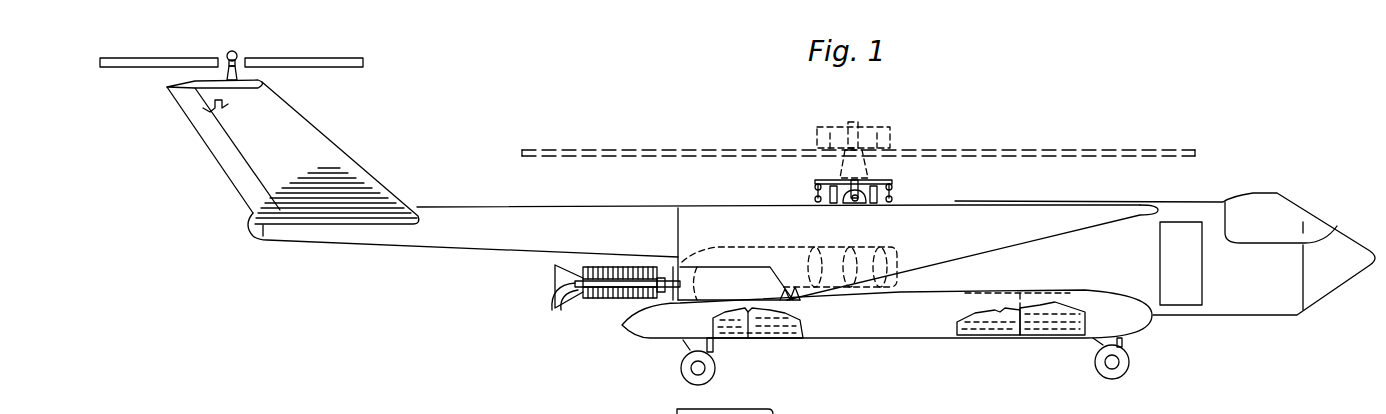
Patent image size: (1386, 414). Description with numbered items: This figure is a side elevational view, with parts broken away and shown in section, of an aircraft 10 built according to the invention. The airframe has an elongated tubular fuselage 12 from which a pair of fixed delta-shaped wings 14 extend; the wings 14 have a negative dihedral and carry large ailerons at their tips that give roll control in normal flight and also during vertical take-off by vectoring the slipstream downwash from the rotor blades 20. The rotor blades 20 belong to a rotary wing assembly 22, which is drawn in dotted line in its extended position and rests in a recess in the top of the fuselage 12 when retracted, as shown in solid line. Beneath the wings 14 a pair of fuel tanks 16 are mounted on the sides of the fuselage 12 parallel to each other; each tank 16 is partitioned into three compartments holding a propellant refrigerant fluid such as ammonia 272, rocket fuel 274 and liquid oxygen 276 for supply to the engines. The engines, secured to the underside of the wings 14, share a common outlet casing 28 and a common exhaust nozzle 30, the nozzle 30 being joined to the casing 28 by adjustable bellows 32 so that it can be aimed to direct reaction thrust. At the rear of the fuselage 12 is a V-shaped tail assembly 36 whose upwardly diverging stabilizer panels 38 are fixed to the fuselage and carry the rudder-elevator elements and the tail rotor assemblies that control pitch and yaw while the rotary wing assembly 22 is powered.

The aircraft 10 is at (1238, 112).
The fuselage 12 is at (513, 206).
The fixed delta-shaped wings 14 is at (1011, 200).
The fuel tanks 16 is at (882, 343).
The rotor blades 20 is at (662, 150).
The rotary wing assembly 22 is at (959, 142).
The common outlet casing 28 is at (667, 268).
The exhaust nozzle 30 is at (555, 280).
The adjustable bellows 32 is at (603, 299).
The V-shaped tail assembly 36 is at (210, 172).
The stabilizer panels 38 is at (328, 145).
The ammonia 272 is at (1040, 325).
The rocket fuel 274 is at (985, 330).
The liquid oxygen 276 is at (733, 332).